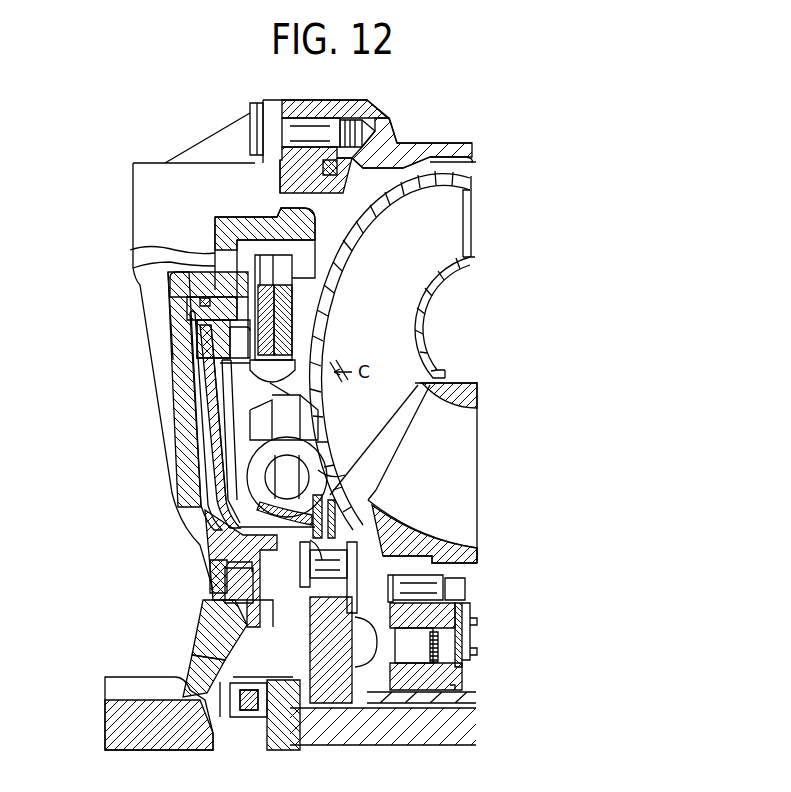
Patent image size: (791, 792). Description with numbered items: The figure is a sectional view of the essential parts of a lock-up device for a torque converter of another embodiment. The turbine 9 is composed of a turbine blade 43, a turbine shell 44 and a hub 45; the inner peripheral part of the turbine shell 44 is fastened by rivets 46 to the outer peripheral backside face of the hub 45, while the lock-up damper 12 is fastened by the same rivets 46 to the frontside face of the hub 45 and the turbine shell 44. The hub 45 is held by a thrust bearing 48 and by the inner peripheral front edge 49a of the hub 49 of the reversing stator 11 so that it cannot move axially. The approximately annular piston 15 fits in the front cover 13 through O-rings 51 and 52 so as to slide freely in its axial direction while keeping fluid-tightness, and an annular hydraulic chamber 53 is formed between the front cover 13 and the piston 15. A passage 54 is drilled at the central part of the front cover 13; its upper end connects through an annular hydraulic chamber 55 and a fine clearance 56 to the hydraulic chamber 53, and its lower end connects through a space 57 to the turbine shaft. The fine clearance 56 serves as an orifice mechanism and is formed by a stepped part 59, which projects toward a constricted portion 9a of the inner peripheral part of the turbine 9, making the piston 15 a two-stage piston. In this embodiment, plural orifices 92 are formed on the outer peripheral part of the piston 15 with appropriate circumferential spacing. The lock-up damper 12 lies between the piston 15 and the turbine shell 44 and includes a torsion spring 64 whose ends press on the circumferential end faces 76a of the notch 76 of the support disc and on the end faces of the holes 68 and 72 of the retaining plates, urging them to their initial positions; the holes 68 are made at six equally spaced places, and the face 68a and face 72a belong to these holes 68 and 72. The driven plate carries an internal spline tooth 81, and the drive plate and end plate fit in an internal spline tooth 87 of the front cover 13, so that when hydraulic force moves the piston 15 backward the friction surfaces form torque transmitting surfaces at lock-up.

The turbine 9 is at (345, 223).
The internal spline tooth 87 is at (140, 258).
The turbine shell 44 is at (342, 255).
The turbine blade 43 is at (386, 336).
The O-ring 52 is at (190, 297).
The orifices 92 is at (178, 330).
The annular hydraulic chamber 53 is at (190, 358).
The internal spline tooth 81 is at (250, 382).
The lock-up damper 12 is at (236, 405).
The holes 68 is at (245, 452).
The ring face 68a is at (238, 428).
The front cover 13 is at (182, 465).
The torsion spring 64 is at (258, 483).
The piston 15 is at (180, 508).
The fine clearance 56 is at (232, 558).
The annular hydraulic chamber 55 is at (256, 584).
The O-ring 51 is at (258, 600).
The thrust bearing 48 is at (212, 635).
The passage 54 is at (222, 662).
The space 57 is at (210, 733).
The stepped part 59 is at (270, 575).
The hub of the reversing stator 49 is at (365, 562).
The constricted portion 9a is at (370, 498).
The hub 45 is at (342, 652).
The inner peripheral front edge 49a is at (373, 648).
The reversing stator 11 is at (447, 501).
The rivets 46 is at (420, 552).
The notch 76 is at (328, 430).
The holes 72 is at (404, 448).
The wedge face 72a is at (360, 452).
The circumferential end faces 76a is at (340, 478).